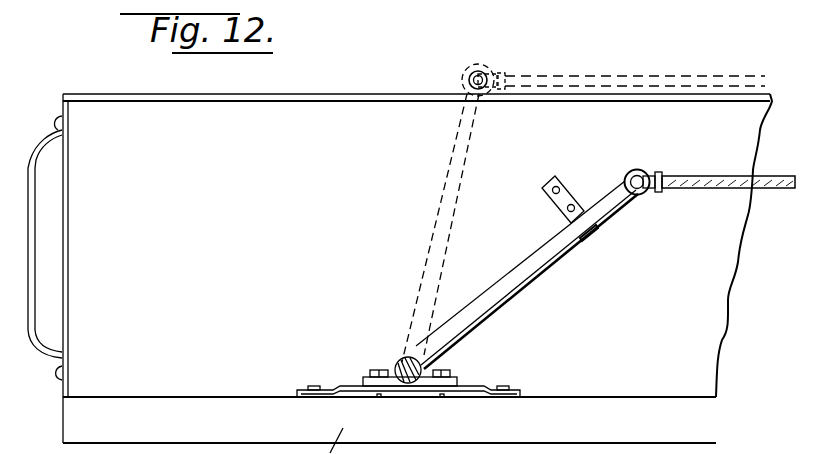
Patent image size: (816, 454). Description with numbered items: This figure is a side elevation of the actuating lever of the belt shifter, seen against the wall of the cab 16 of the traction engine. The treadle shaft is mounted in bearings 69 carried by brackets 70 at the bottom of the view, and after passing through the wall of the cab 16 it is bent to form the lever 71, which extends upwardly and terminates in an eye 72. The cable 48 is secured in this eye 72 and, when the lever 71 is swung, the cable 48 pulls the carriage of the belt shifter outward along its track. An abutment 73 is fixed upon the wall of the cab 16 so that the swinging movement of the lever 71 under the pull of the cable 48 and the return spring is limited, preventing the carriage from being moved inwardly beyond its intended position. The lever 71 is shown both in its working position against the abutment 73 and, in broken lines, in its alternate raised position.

The cab 16 is at (400, 268).
The cable 48 is at (640, 75).
The bearings 69 is at (440, 382).
The brackets 70 is at (331, 388).
The lever 71 is at (442, 268).
The eye 72 is at (497, 65).
The abutment 73 is at (568, 185).